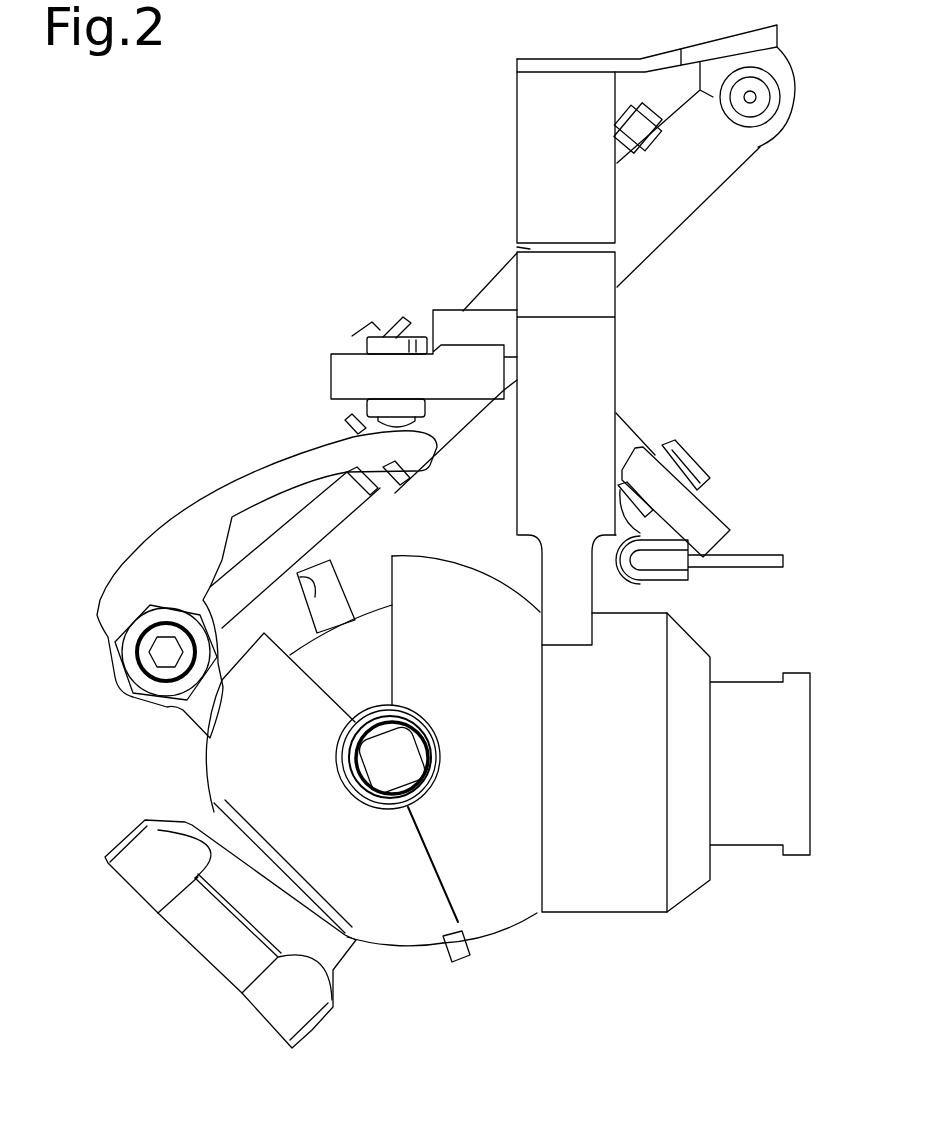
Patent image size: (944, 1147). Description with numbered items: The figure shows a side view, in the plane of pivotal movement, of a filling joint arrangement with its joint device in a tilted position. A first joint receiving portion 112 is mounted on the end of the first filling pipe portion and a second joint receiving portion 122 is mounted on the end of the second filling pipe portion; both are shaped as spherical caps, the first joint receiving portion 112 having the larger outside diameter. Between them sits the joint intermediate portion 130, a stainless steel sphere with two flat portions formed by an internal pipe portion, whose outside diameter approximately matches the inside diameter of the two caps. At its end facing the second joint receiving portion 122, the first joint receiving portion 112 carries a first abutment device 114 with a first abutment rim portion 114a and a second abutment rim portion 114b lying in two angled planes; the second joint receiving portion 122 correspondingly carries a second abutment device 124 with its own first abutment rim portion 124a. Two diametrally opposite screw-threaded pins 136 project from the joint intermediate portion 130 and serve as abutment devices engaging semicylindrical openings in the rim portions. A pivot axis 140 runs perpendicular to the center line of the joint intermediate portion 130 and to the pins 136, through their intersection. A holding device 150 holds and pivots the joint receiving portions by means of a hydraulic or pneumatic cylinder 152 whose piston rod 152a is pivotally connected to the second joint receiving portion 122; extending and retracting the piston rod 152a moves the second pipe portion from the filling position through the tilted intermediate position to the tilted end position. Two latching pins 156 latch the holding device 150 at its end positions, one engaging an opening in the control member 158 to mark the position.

The first joint receiving portion 112 is at (700, 895).
The first abutment device 114 is at (513, 893).
The first abutment rim portion 114a is at (393, 647).
The second abutment rim portion 114b is at (458, 922).
The second joint receiving portion 122 is at (312, 1030).
The second abutment device 124 is at (240, 765).
The first abutment rim portion 124a is at (272, 632).
The joint intermediate portion 130 is at (357, 652).
The screw-threaded pins 136 is at (323, 598).
The pivot axis 140 is at (392, 758).
The holding device 150 is at (477, 236).
The hydraulic or pneumatic cylinder 152 is at (683, 185).
The piston rod 152a is at (273, 543).
The latching pins 156 is at (377, 337).
The control member 158 is at (138, 582).